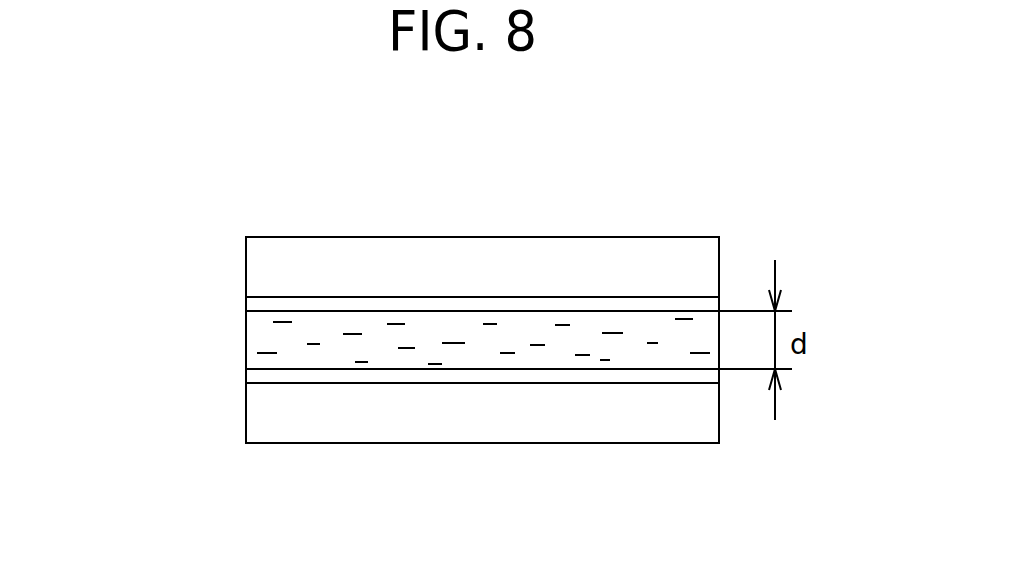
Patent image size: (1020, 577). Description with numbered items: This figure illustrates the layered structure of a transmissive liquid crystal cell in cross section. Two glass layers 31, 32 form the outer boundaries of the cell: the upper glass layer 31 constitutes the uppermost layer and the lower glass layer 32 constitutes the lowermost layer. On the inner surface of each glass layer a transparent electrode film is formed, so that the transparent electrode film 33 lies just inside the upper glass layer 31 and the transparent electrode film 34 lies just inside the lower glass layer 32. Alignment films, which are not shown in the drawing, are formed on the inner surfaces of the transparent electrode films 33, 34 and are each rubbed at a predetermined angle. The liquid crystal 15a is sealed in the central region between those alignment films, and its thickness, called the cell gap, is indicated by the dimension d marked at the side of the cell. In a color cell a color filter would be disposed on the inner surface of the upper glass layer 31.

The glass layer 31 is at (706, 260).
The glass layer 32 is at (705, 420).
The transparent electrode film 33 is at (537, 305).
The transparent electrode film 34 is at (538, 375).
The liquid crystal 15a is at (267, 343).